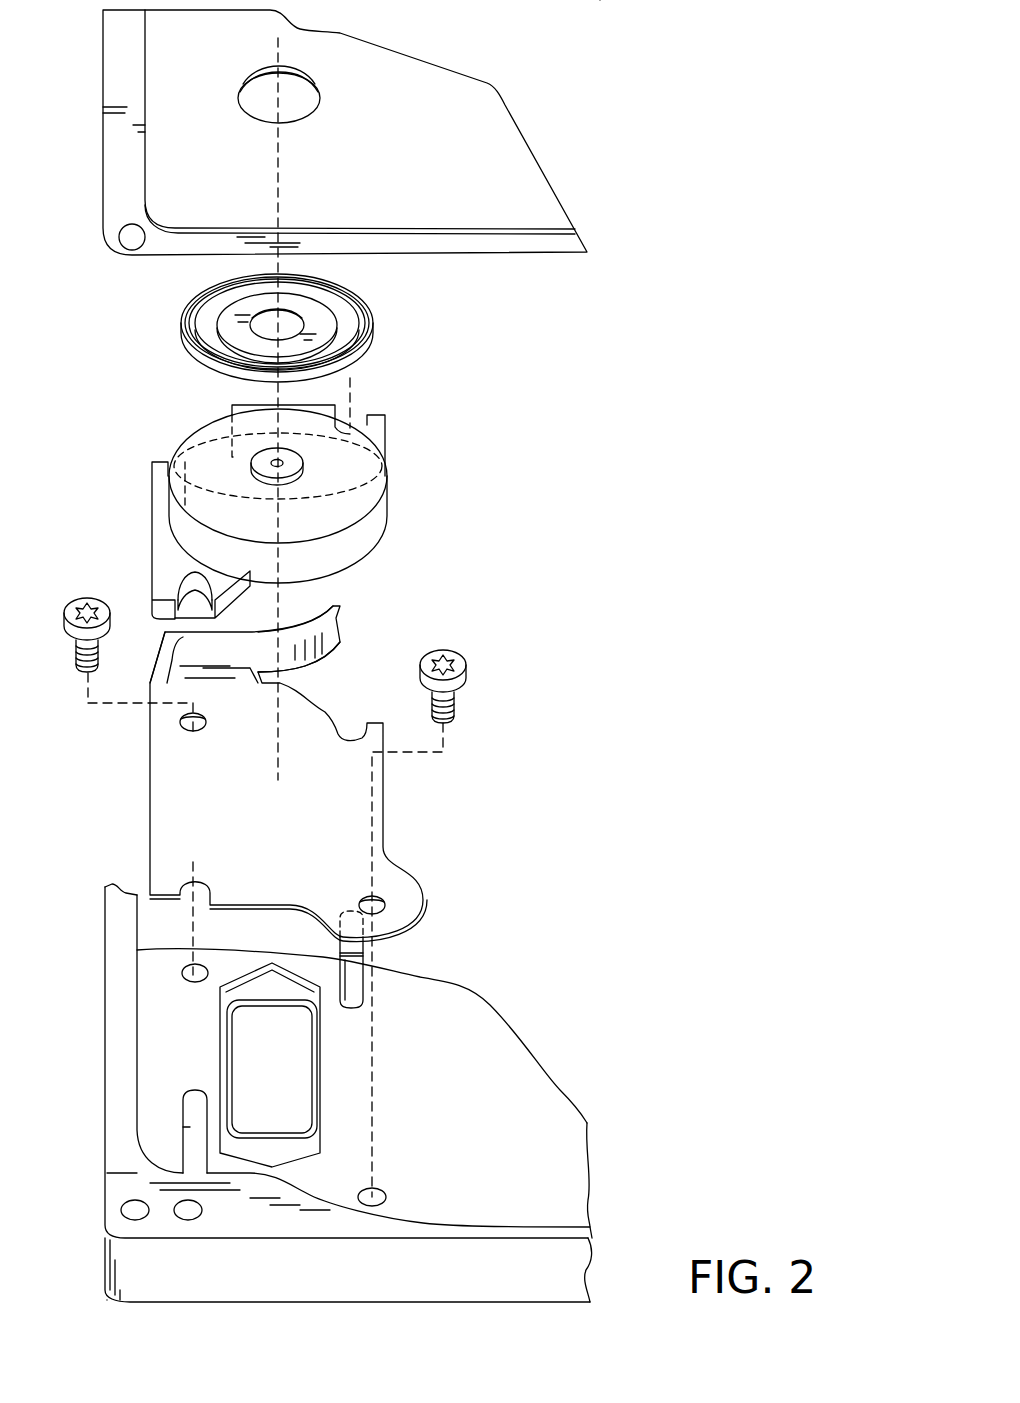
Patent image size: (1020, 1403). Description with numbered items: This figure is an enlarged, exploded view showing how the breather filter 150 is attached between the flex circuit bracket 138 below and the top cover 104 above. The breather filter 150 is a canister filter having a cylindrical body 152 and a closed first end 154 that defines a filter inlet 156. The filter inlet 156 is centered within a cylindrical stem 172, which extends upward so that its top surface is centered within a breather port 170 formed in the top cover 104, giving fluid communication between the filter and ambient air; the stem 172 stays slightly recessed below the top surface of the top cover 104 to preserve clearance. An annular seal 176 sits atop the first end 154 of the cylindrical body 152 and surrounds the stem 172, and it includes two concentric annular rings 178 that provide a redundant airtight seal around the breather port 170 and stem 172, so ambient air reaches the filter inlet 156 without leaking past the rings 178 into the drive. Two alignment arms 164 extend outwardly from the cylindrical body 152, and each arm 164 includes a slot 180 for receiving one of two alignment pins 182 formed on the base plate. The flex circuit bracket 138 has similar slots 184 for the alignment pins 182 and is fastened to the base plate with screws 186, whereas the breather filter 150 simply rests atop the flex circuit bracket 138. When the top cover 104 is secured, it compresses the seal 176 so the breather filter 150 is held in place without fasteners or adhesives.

The top cover 104 is at (523, 240).
The breather port 170 is at (297, 76).
The annular seal 176 is at (372, 334).
The concentric annular rings 178 is at (212, 300).
The breather filter 150 is at (440, 491).
The cylindrical body 152 is at (363, 546).
The closed first end 154 is at (203, 437).
The filter inlet 156 is at (288, 466).
The cylindrical stem 172 is at (298, 466).
The alignment arms 164 is at (158, 527).
The slot 180 is at (188, 582).
The screws 186 is at (458, 703).
The flex circuit bracket 138 is at (383, 793).
The slots 184 is at (328, 717).
The alignment pins 182 is at (365, 955).